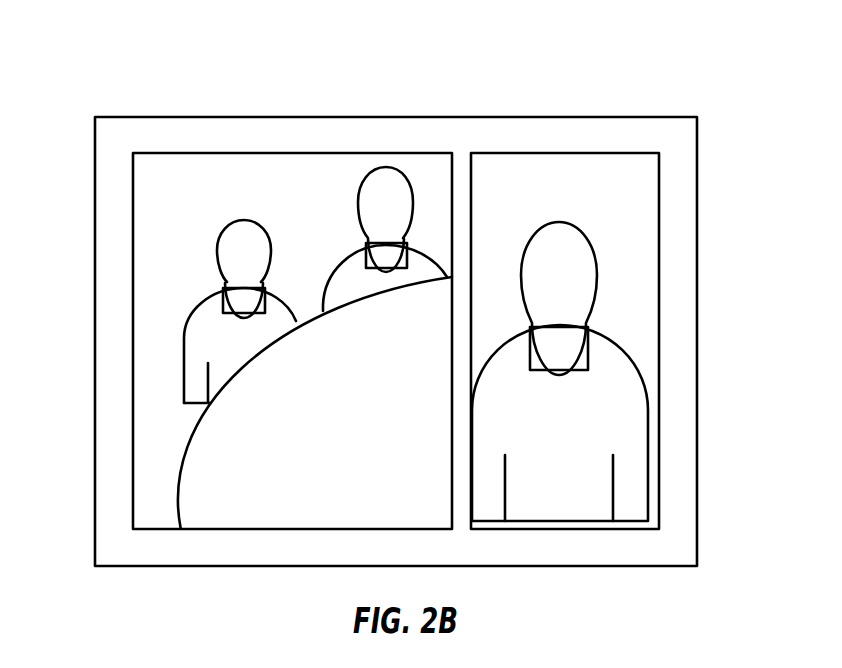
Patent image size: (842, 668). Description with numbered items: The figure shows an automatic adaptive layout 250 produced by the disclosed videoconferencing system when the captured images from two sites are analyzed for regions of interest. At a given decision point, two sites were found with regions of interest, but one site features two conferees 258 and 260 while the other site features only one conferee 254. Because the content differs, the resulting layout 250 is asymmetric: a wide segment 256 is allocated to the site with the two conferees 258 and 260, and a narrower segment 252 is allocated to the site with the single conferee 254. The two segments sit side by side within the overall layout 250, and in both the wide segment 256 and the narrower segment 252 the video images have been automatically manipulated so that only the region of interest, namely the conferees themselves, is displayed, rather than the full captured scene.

The automatic adaptive layout 250 is at (396, 297).
The narrower segment 252 is at (617, 287).
The conferee 254 is at (619, 349).
The wide segment 256 is at (287, 295).
The conferee 258 is at (369, 239).
The conferee 260 is at (159, 311).